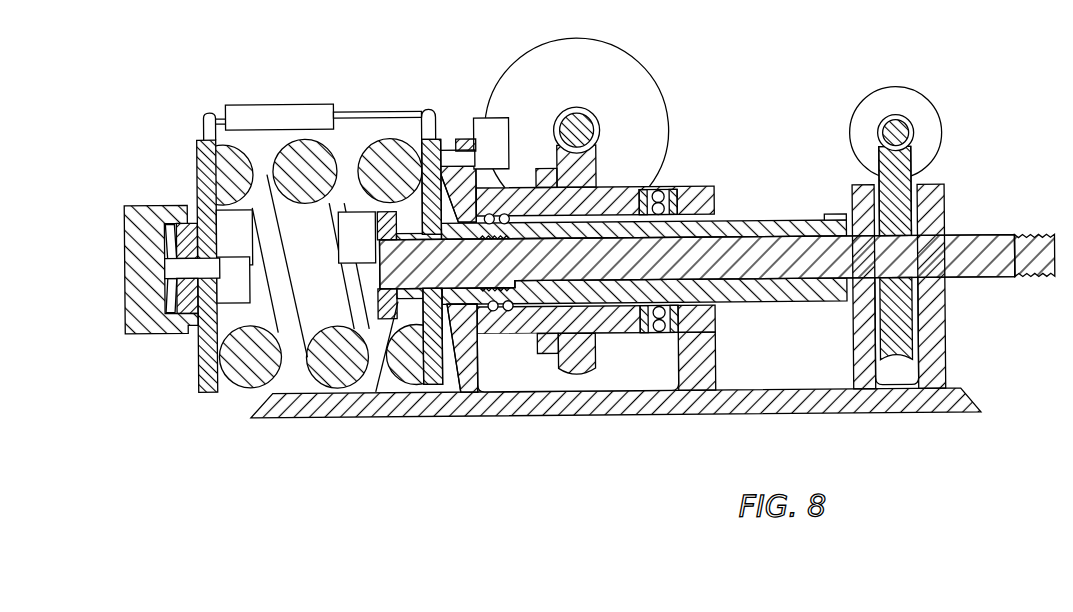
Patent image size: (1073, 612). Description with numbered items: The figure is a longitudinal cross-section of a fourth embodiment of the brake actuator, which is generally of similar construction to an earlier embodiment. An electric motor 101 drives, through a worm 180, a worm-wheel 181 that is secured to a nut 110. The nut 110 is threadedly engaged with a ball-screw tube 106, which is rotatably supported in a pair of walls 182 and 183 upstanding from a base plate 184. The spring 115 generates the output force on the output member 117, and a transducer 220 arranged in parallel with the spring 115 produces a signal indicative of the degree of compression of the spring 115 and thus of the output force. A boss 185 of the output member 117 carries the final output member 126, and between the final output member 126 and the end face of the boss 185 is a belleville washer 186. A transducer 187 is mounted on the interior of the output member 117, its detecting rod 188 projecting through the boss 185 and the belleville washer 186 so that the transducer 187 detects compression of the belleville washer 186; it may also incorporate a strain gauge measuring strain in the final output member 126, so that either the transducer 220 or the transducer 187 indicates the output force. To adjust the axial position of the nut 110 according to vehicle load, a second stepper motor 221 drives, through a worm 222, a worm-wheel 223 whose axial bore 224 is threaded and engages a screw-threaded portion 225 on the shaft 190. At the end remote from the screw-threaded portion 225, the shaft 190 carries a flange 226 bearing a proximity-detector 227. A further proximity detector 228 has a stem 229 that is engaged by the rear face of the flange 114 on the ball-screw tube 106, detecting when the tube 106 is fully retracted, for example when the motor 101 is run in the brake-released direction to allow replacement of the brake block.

The electric motor 101 is at (592, 72).
The ball-screw tube 106 is at (556, 296).
The nut 110 is at (625, 342).
The flange 114 is at (440, 135).
The spring 115 is at (318, 158).
The output member 117 is at (203, 364).
The final output member 126 is at (147, 255).
The worm 180 is at (590, 125).
The worm-wheel 181 is at (582, 168).
The wall 182 is at (697, 337).
The wall 183 is at (468, 363).
The base plate 184 is at (673, 192).
The boss 185 is at (193, 297).
The belleville washer 186 is at (167, 224).
The transducer 187 is at (207, 222).
The detecting rod 188 is at (197, 267).
The shaft 190 is at (747, 256).
The transducer 220 is at (280, 113).
The second stepper motor 221 is at (890, 104).
The worm 222 is at (906, 133).
The worm-wheel 223 is at (895, 220).
The axial bore 224 is at (857, 305).
The screw-threaded portion 225 is at (935, 283).
The flange 226 is at (382, 330).
The proximity-detector 227 is at (357, 237).
The proximity detector 228 is at (503, 122).
The stem 229 is at (460, 156).